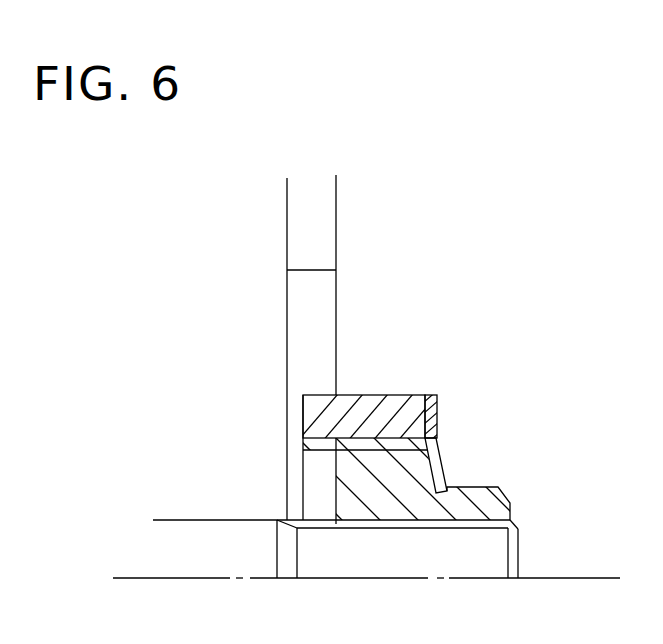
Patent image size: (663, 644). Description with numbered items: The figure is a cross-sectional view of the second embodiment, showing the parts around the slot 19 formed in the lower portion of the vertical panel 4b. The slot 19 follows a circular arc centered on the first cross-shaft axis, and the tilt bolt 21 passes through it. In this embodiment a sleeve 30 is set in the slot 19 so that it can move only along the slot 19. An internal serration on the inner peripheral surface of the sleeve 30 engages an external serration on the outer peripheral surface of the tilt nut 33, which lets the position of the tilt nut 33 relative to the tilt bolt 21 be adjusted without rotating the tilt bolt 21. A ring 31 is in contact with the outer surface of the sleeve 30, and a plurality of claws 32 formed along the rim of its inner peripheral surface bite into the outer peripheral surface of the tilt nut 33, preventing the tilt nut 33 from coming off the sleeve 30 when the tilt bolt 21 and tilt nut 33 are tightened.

The vertical panel 4b is at (336, 227).
The slot 19 is at (310, 271).
The sleeve 30 is at (387, 395).
The ring 31 is at (437, 418).
The claws 32 is at (447, 467).
The tilt nut 33 is at (495, 505).
The tilt bolt 21 is at (228, 537).